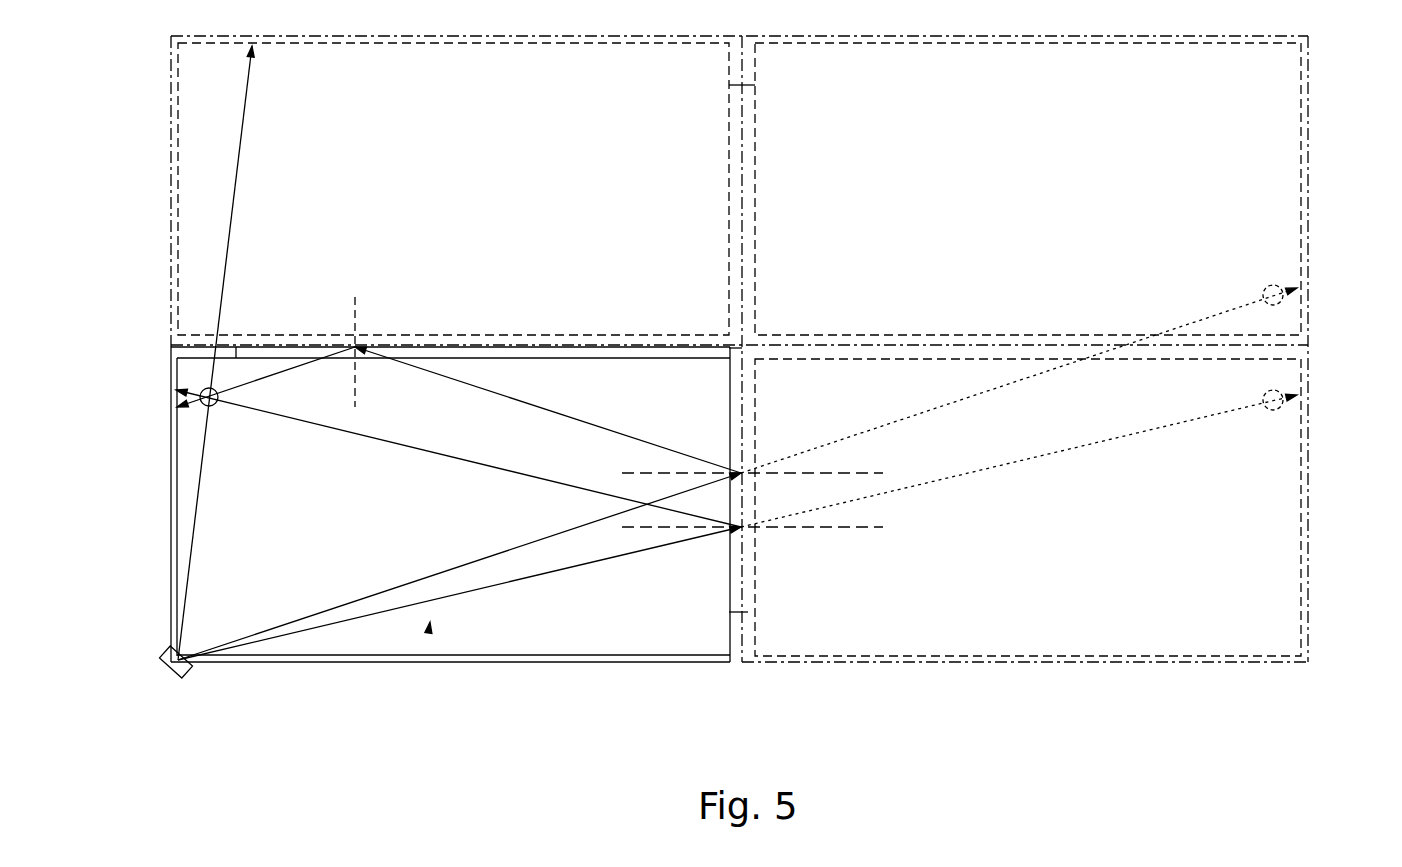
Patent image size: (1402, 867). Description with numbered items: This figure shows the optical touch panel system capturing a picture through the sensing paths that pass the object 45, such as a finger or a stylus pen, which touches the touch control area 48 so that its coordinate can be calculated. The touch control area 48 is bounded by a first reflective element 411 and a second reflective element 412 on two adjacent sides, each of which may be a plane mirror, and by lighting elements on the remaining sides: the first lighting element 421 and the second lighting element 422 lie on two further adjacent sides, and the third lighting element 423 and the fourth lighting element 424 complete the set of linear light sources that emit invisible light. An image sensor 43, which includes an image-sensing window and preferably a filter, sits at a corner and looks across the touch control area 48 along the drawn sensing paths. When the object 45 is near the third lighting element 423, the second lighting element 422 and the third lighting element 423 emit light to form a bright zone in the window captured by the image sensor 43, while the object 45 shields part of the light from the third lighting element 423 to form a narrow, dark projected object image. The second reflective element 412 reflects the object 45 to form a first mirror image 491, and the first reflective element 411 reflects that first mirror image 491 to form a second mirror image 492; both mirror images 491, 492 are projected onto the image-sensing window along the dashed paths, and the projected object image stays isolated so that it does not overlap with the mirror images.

The first reflective element 411 is at (260, 353).
The second reflective element 412 is at (730, 582).
The first lighting element 421 is at (468, 662).
The second lighting element 422 is at (173, 477).
The third lighting element 423 is at (203, 355).
The fourth lighting element 424 is at (737, 650).
The image sensor 43 is at (160, 672).
The object 45 is at (178, 385).
The touch control area 48 is at (428, 630).
The first mirror image 491 is at (1273, 410).
The second mirror image 492 is at (1273, 285).